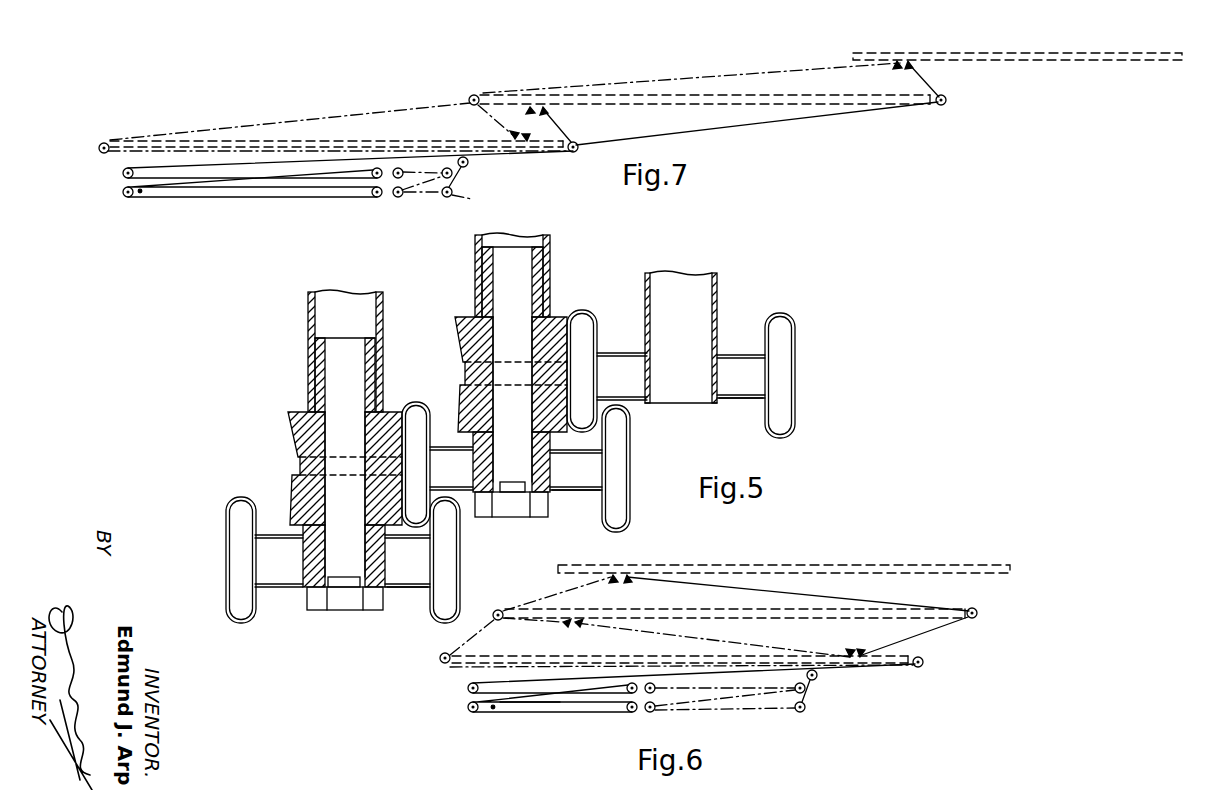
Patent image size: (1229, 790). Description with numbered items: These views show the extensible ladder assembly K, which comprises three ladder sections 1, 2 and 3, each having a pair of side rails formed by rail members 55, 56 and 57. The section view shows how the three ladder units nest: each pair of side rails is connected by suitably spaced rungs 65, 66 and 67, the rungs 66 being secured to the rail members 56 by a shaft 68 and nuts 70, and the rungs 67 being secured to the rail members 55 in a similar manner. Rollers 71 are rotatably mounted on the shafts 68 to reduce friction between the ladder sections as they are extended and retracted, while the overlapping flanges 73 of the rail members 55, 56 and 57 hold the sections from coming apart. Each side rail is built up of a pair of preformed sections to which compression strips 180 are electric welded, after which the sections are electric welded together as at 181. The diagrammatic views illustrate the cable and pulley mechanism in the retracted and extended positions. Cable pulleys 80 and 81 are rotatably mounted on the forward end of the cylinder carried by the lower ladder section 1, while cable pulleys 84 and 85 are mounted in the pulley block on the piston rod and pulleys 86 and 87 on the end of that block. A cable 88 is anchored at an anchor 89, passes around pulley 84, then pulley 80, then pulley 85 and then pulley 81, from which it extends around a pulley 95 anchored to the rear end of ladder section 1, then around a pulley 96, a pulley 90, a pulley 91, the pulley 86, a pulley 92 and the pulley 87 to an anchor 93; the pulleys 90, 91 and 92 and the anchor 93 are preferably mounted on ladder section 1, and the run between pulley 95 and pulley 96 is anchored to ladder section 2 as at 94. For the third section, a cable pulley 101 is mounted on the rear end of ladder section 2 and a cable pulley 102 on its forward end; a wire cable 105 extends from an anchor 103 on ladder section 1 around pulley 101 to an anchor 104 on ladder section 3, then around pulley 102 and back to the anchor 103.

In FIG. 7, the ladder section 1 is at (372, 130).
In FIG. 6, the ladder section 1 is at (545, 660).
In FIG. 7, the ladder section 2 is at (798, 103).
In FIG. 6, the ladder section 2 is at (652, 608).
In FIG. 7, the ladder section 3 is at (978, 80).
In FIG. 6, the ladder section 3 is at (890, 565).
In FIG. 5, the rail member 55 is at (400, 588).
In FIG. 5, the rail member 56 is at (563, 492).
In FIG. 5, the rail member 57 is at (734, 401).
In FIG. 5, the rung 65 is at (644, 303).
In FIG. 5, the rung 66 is at (473, 268).
In FIG. 5, the rung 67 is at (307, 310).
In FIG. 5, the shaft 68 is at (429, 412).
In FIG. 5, the nut 70 is at (381, 612).
In FIG. 5, the roller 71 is at (287, 422).
In FIG. 5, the overlapping flange 73 is at (370, 514).
In FIG. 7, the cable pulley 80 is at (123, 195).
In FIG. 6, the cable pulley 80 is at (468, 710).
In FIG. 7, the cable pulley 81 is at (123, 175).
In FIG. 6, the cable pulley 81 is at (468, 690).
In FIG. 7, the cable pulley 84 is at (372, 176).
In FIG. 6, the cable pulley 84 is at (628, 710).
In FIG. 7, the cable pulley 85 is at (375, 193).
In FIG. 6, the cable pulley 85 is at (628, 690).
In FIG. 7, the pulley 86 is at (397, 197).
In FIG. 6, the pulley 86 is at (654, 711).
In FIG. 7, the pulley 87 is at (398, 168).
In FIG. 6, the pulley 87 is at (650, 683).
In FIG. 6, the cable 88 is at (520, 709).
In FIG. 7, the anchor 89 is at (140, 194).
In FIG. 6, the anchor 89 is at (493, 710).
In FIG. 7, the pulley 90 is at (467, 165).
In FIG. 6, the pulley 90 is at (817, 677).
In FIG. 7, the pulley 91 is at (446, 197).
In FIG. 6, the pulley 91 is at (802, 712).
In FIG. 6, the pulley 92 is at (807, 690).
In FIG. 7, the anchor 93 is at (445, 178).
In FIG. 6, the anchor 93 is at (795, 690).
In FIG. 7, the anchor 94 is at (545, 109).
In FIG. 6, the anchor 94 is at (560, 626).
In FIG. 7, the pulley 95 is at (576, 152).
In FIG. 6, the pulley 95 is at (919, 667).
In FIG. 7, the pulley 96 is at (94, 160).
In FIG. 6, the pulley 96 is at (441, 660).
In FIG. 6, the cable pulley 101 is at (978, 613).
In FIG. 7, the cable pulley 102 is at (472, 95).
In FIG. 6, the cable pulley 102 is at (494, 617).
In FIG. 7, the anchor 103 is at (518, 136).
In FIG. 6, the anchor 103 is at (851, 655).
In FIG. 7, the anchor 104 is at (900, 65).
In FIG. 6, the anchor 104 is at (615, 578).
In FIG. 7, the wire cable 105 is at (760, 124).
In FIG. 6, the wire cable 105 is at (820, 596).
In FIG. 5, the compression strip 180 is at (240, 550).
In FIG. 5, the weld 181 is at (632, 470).
In FIG. 5, the assembly K is at (649, 455).